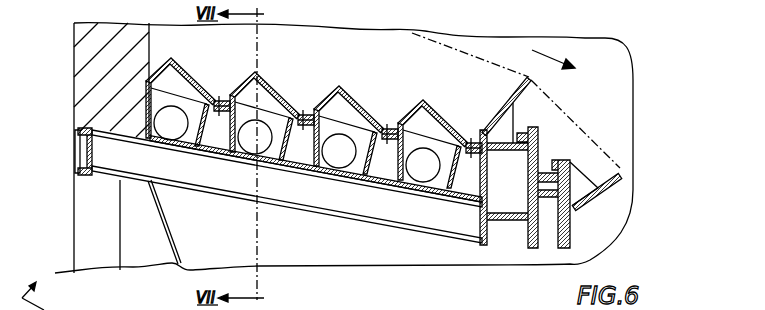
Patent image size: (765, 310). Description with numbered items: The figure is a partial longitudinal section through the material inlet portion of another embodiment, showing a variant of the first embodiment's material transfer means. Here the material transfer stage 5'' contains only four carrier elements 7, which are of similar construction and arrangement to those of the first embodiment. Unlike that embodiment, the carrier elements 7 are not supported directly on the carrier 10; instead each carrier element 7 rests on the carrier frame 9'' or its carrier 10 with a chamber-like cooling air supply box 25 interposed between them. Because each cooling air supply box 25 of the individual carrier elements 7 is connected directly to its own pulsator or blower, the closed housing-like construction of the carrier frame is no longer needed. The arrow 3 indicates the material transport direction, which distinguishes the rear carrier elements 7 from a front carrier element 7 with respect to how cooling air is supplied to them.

The arrow 3 is at (550, 58).
The material transfer stage 5'' is at (491, 128).
The carrier elements 7 is at (188, 78).
The carrier frame 9'' is at (62, 175).
The carrier 10 is at (173, 173).
The cooling air supply box 25 is at (158, 97).